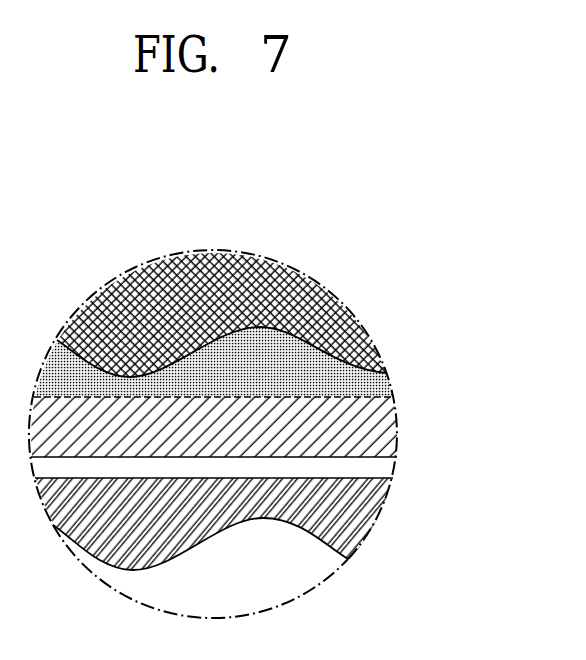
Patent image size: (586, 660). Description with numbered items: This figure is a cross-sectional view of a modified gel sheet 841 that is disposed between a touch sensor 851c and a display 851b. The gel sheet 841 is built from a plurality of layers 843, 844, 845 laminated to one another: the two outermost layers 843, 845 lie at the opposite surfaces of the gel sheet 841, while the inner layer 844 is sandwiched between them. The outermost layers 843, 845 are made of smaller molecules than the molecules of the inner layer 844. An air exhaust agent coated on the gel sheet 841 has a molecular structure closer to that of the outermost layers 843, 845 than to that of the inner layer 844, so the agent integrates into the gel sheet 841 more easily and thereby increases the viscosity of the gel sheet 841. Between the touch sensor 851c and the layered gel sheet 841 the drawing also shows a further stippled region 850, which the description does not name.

The gel sheet 841 is at (259, 483).
The outermost layer 843 is at (390, 421).
The inner layer 844 is at (387, 463).
The outermost layer 845 is at (235, 524).
The adhesive layer 850 is at (388, 382).
The display 851b is at (312, 582).
The touch sensor 851c is at (350, 317).